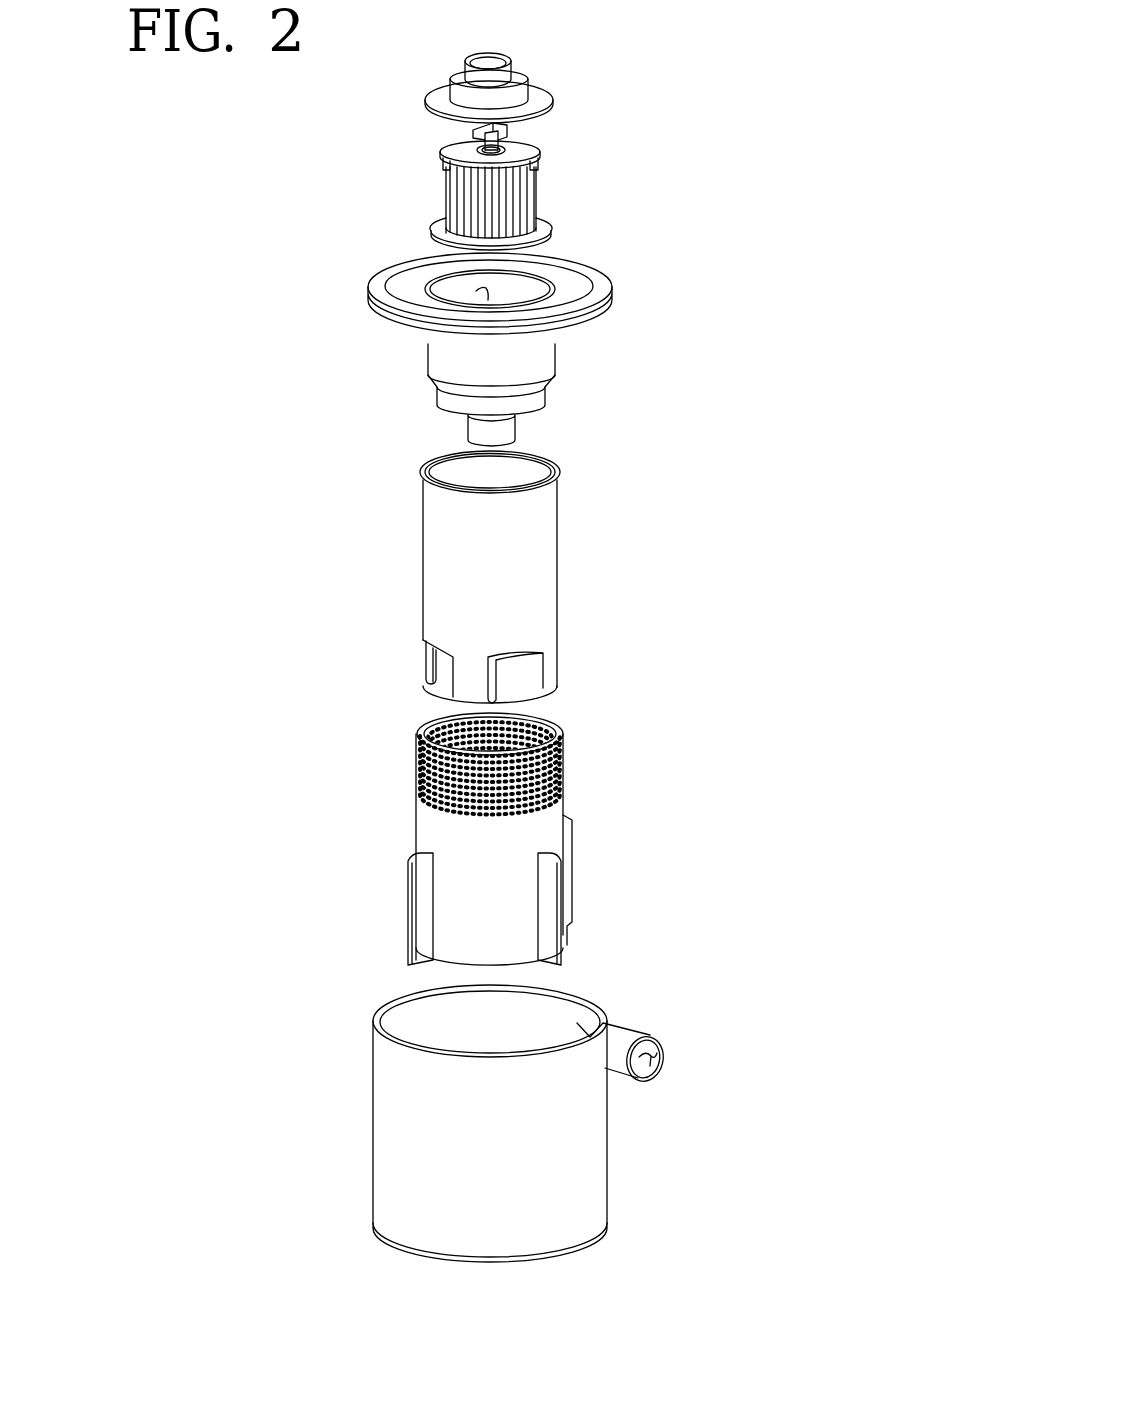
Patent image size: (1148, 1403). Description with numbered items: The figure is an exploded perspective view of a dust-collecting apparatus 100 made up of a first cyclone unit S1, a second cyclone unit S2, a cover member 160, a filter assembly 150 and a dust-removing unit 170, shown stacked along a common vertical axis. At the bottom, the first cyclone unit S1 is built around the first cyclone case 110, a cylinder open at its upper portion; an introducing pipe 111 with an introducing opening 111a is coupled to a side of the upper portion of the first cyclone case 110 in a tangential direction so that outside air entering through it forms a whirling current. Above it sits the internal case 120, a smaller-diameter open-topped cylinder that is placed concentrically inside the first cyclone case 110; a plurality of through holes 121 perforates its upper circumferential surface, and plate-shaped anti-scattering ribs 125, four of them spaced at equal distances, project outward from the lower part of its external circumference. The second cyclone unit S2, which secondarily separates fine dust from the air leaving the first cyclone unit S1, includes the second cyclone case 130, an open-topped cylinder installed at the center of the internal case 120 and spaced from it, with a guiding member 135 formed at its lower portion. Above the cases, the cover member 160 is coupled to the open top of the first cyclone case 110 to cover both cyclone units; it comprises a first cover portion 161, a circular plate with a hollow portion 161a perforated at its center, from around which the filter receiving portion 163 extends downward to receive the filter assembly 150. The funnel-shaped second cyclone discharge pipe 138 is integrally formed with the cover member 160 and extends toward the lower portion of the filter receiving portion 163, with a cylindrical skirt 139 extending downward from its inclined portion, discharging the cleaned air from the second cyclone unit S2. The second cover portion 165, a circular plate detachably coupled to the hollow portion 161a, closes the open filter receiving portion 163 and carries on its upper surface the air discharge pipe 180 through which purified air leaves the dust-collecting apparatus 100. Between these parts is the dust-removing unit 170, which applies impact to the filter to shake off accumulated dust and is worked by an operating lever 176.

The dust-collecting apparatus 100 is at (825, 38).
The first cyclone case 110 is at (857, 998).
The introducing pipe 111 is at (630, 1030).
The introducing opening 111a is at (653, 1076).
The internal case 120 is at (857, 998).
The through holes 121 is at (560, 752).
The anti-scattering rib 125 is at (422, 883).
The second cyclone case 130 is at (797, 525).
The guiding member 135 is at (797, 525).
The second cyclone discharge pipe 138 is at (797, 525).
The cylindrical skirt 139 is at (545, 390).
The filter assembly 150 is at (542, 202).
The cover member 160 is at (670, 67).
The first cover portion 161 is at (586, 258).
The hollow portion 161a is at (475, 294).
The filter receiving portion 163 is at (553, 357).
The second cover portion 165 is at (541, 80).
The dust-removing unit 170 is at (510, 133).
The operating lever 176 is at (473, 131).
The air discharge pipe 180 is at (464, 64).
The first cyclone unit S1 is at (597, 987).
The second cyclone unit S2 is at (628, 577).